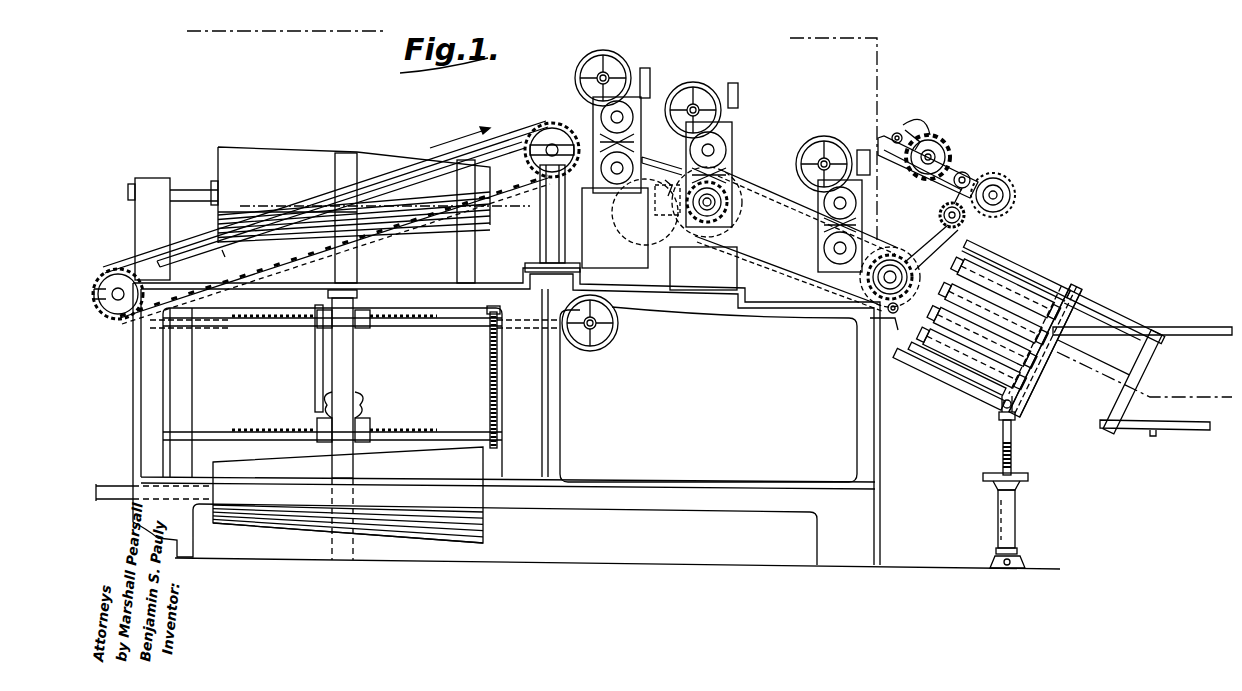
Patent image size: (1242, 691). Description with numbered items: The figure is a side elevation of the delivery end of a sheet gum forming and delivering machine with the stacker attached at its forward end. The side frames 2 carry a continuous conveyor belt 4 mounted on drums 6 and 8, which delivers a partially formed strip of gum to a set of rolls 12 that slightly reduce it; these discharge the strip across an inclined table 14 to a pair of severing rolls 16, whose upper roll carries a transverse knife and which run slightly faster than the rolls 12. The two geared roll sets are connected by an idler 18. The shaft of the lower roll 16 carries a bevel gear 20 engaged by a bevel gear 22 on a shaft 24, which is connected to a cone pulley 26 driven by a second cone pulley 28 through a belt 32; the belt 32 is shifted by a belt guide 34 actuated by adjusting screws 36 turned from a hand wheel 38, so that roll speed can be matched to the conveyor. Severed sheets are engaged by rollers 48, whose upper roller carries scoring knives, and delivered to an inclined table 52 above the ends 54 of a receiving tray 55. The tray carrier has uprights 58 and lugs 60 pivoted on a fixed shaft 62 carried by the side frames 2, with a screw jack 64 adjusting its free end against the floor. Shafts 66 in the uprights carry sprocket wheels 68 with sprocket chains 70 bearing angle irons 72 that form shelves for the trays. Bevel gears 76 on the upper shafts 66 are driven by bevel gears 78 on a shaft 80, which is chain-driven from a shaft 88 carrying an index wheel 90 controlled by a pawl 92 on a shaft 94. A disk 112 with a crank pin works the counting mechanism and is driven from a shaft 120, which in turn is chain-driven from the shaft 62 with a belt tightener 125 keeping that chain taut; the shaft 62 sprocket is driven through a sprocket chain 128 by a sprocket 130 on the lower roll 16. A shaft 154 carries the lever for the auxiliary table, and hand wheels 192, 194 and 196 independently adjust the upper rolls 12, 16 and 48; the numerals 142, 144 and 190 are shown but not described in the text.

The side frames 2 is at (185, 31).
The continuous conveyor belt 4 is at (397, 172).
The drum 6 is at (116, 270).
The drum 8 is at (538, 135).
The rolls 12 is at (675, 68).
The inclined table 14 is at (642, 160).
The rolls 16 is at (740, 150).
The idler 18 is at (630, 242).
The bevel gear 20 is at (745, 170).
The bevel gear 22 is at (664, 180).
The shaft 24 is at (197, 192).
The cone pulley 26 is at (284, 165).
The second cone pulley 28 is at (285, 526).
The belt 32 is at (345, 368).
The belt guide 34 is at (314, 362).
The adjusting screws 36 is at (432, 325).
The hand wheel 38 is at (592, 350).
The rollers 48 is at (822, 200).
The inclined table 52 is at (870, 298).
The ends 54 is at (1040, 356).
The receiving tray 55 is at (1035, 372).
The uprights 58 is at (1080, 300).
The lugs 60 is at (886, 308).
The fixed shaft 62 is at (893, 255).
The screw jack 64 is at (1018, 500).
The shafts 66 is at (1021, 277).
The sprocket wheels 68 is at (936, 405).
The sprocket chains 70 is at (946, 390).
The angle irons 72 is at (1027, 256).
The bevel gears 76 is at (1026, 251).
The bevel gears 78 is at (930, 250).
The shaft 80 is at (925, 240).
The shaft 88 is at (950, 150).
The index wheel 90 is at (940, 138).
The pawl 92 is at (925, 118).
The shaft 94 is at (897, 128).
The disk 112 is at (950, 160).
The shaft 120 is at (1015, 190).
The belt tightener 125 is at (940, 212).
The sprocket chain 128 is at (782, 262).
The sprocket 130 is at (740, 212).
The lower rail 142 is at (1125, 430).
The upper rail 144 is at (1160, 328).
The shaft 154 is at (866, 322).
The wheel hub 190 is at (1005, 198).
The hand wheel 192 is at (600, 52).
The hand wheel 194 is at (700, 85).
The hand wheel 196 is at (838, 138).